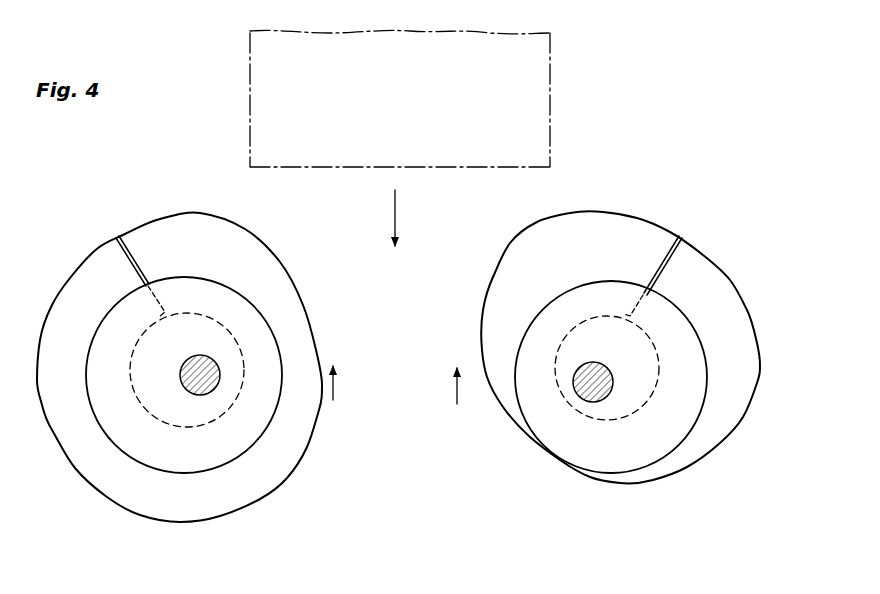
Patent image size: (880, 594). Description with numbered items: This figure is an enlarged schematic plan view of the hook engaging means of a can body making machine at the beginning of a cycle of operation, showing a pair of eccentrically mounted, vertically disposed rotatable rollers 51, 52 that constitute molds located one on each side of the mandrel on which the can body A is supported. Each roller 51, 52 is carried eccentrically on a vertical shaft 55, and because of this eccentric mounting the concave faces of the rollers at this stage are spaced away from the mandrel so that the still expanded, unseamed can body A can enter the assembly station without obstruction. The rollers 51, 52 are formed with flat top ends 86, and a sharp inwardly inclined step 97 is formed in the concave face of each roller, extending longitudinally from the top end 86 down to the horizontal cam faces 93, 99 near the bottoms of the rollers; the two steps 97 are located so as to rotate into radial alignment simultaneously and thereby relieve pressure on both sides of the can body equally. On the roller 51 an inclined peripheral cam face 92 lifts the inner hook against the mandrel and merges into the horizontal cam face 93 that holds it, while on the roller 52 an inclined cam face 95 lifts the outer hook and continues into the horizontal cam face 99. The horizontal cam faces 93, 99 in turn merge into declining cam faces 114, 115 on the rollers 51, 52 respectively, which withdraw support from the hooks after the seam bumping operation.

The can body A is at (552, 88).
The roller 51 is at (290, 431).
The roller 52 is at (495, 331).
The vertical shaft 55 is at (210, 388).
The top end 86 is at (262, 342).
The inclined peripheral cam face 92 is at (46, 428).
The horizontal cam face 93 is at (62, 287).
The inclined peripheral cam face 95 is at (736, 287).
The inclined step 97 is at (132, 268).
The horizontal cam face 99 is at (539, 228).
The declining cam face 114 is at (250, 232).
The declining cam face 115 is at (490, 280).